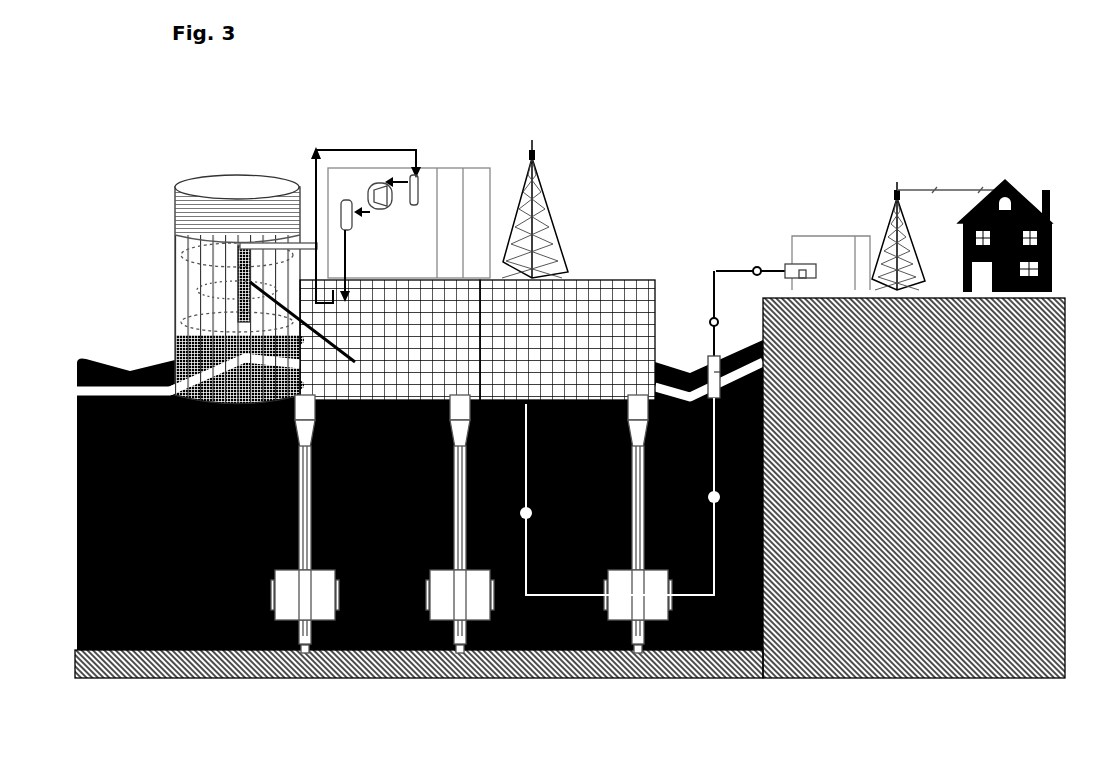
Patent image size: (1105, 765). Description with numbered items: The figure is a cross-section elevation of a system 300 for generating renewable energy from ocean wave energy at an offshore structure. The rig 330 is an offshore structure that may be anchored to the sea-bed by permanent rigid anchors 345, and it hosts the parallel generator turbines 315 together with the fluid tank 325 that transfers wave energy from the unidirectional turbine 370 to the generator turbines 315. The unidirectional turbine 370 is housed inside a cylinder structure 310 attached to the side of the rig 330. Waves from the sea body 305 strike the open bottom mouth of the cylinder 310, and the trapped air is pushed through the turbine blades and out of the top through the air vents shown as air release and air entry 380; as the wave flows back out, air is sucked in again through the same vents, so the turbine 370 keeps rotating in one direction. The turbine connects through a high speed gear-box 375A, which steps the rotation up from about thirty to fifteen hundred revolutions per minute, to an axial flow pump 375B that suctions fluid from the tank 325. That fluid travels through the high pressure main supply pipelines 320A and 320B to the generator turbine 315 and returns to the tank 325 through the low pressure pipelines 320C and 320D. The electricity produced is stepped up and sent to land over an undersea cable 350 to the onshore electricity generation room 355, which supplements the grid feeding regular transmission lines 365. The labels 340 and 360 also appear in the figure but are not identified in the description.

The system 300 is at (956, 44).
The sea body 305 is at (420, 492).
The cylinder structure 310 is at (237, 291).
The generator turbines 315 is at (369, 196).
The high pressure main supply pipeline 320A is at (397, 148).
The high pressure main supply pipeline 320B is at (419, 193).
The low pressure pipeline 320C is at (357, 226).
The low pressure pipeline 320D is at (348, 256).
The fluid tank 325 is at (390, 340).
The rig 330 is at (567, 340).
The transmission tower 340 is at (563, 200).
The permanent rigid anchors 345 is at (316, 470).
The undersea cable 350 is at (713, 435).
The onshore electricity generation room 355 is at (818, 250).
The earth region 360 is at (914, 488).
The regular transmission lines 365 is at (974, 227).
The unidirectional turbine 370 is at (219, 303).
The high speed gear-box 375A is at (346, 338).
The axial flow pump 375B is at (226, 262).
The air release / air entry 380 is at (188, 210).